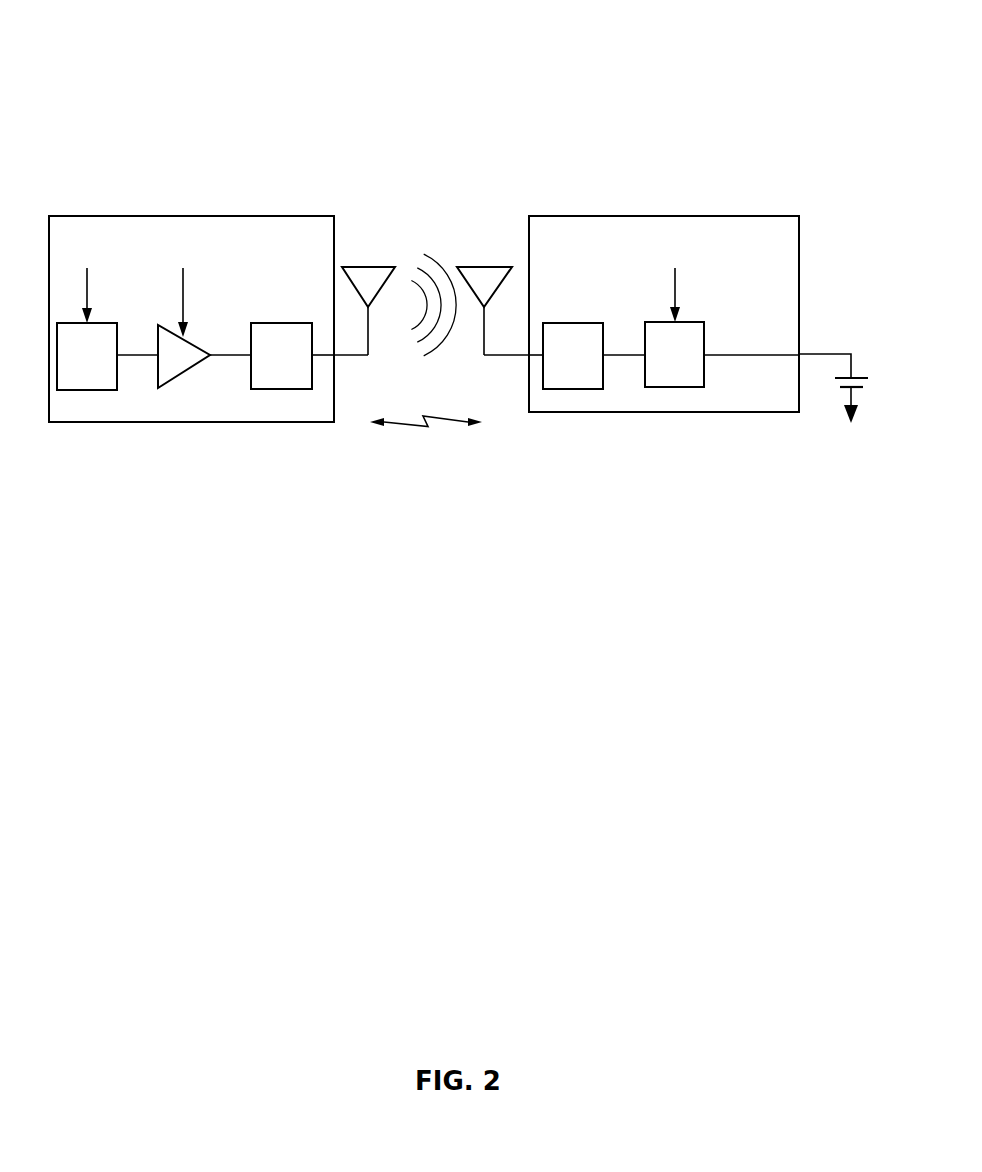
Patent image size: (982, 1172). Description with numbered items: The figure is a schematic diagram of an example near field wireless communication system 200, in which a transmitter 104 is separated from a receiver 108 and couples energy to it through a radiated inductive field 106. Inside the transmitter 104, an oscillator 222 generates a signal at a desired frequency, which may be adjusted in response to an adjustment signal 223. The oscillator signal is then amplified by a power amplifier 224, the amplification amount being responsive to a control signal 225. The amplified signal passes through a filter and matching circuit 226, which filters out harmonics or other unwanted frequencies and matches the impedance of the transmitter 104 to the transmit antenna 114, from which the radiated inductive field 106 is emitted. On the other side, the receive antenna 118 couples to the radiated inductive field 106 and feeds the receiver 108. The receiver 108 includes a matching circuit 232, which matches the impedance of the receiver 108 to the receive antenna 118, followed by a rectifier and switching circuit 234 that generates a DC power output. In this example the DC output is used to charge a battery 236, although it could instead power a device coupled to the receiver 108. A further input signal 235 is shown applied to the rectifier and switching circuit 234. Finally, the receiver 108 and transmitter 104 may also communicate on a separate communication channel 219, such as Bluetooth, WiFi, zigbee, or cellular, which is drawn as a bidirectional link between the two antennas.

The near field wireless communication system 200 is at (277, 53).
The transmitter 104 is at (175, 246).
The oscillator 222 is at (72, 380).
The adjustment signal 223 is at (88, 290).
The power amplifier 224 is at (162, 366).
The control signal 225 is at (184, 290).
The filter and matching circuit 226 is at (266, 368).
The transmit antenna 114 is at (350, 265).
The receive antenna 118 is at (500, 265).
The radiated inductive field 106 is at (431, 350).
The communication channel 219 is at (427, 440).
The receiver 108 is at (650, 246).
The matching circuit 232 is at (558, 368).
The rectifier and switching circuit 234 is at (660, 368).
The rectifier/switching control signal 235 is at (674, 280).
The battery 236 is at (812, 352).